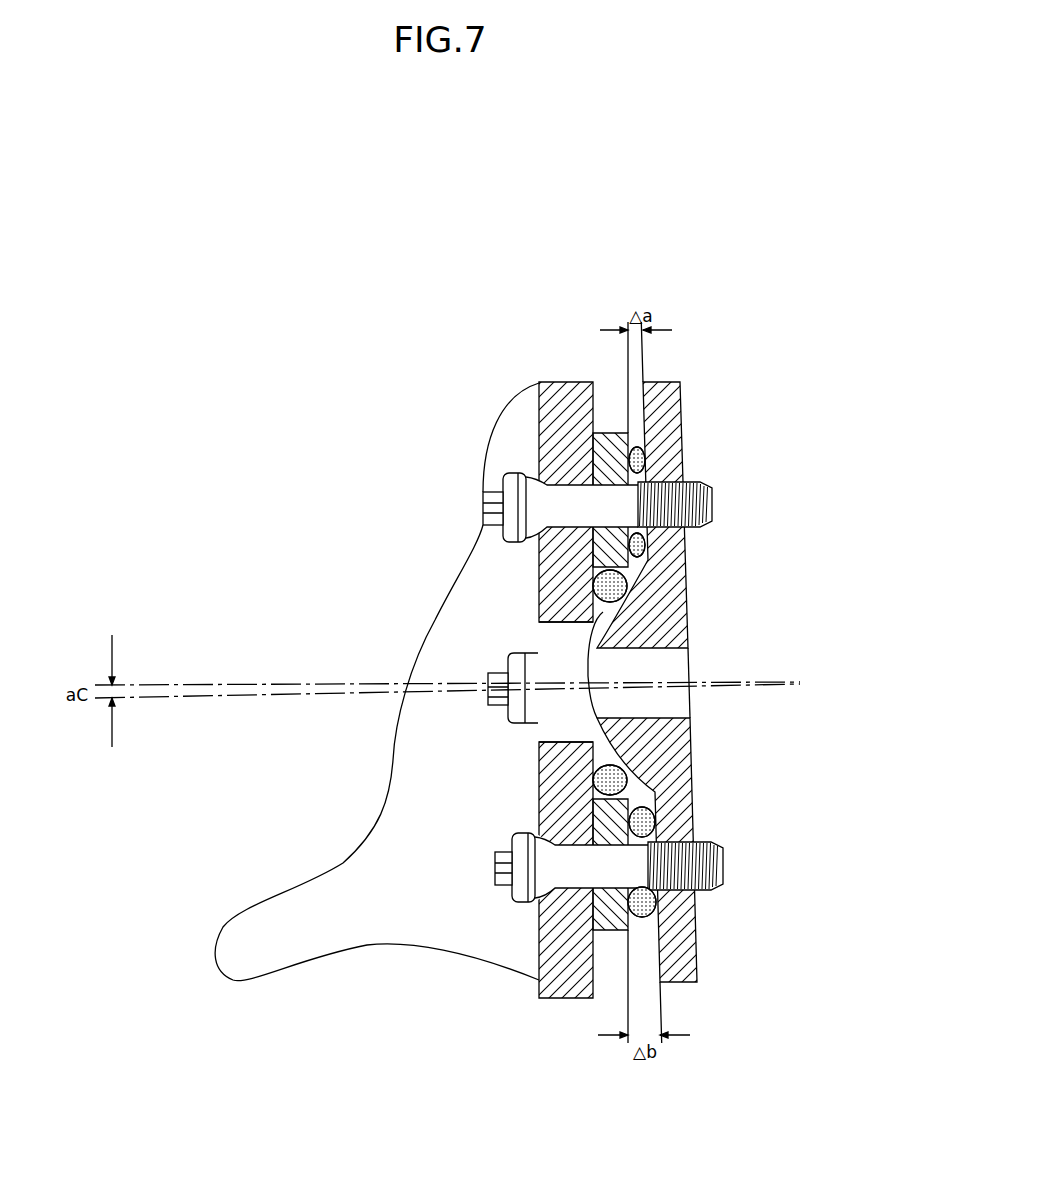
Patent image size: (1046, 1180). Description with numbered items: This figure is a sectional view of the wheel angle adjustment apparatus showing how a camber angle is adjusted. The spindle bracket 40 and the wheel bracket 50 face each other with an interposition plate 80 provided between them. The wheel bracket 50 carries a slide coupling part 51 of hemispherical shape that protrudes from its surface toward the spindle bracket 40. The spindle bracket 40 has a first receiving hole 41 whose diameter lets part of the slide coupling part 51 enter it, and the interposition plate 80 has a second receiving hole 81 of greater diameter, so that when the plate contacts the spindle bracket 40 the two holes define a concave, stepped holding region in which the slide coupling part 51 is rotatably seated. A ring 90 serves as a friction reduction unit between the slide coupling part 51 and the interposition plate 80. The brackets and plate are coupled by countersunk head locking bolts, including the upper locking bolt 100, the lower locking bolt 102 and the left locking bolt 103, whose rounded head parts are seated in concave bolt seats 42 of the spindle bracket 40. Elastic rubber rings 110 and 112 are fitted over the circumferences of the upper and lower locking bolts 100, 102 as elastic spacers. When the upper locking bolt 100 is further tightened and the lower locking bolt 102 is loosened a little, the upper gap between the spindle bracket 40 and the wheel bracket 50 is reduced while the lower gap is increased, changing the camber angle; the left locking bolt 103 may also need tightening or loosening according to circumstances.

The spindle bracket 40 is at (577, 417).
The first receiving hole 41 is at (578, 708).
The concave bolt seat 42 is at (543, 462).
The wheel bracket 50 is at (668, 458).
The slide coupling part 51 is at (600, 655).
The interposition plate 80 is at (620, 433).
The second receiving hole 81 is at (598, 603).
The ring 90 is at (627, 583).
The upper locking bolt 100 is at (493, 508).
The lower locking bolt 102 is at (500, 862).
The left locking bolt 103 is at (497, 677).
The elastic rubber ring 110 is at (650, 452).
The elastic rubber ring 112 is at (655, 822).